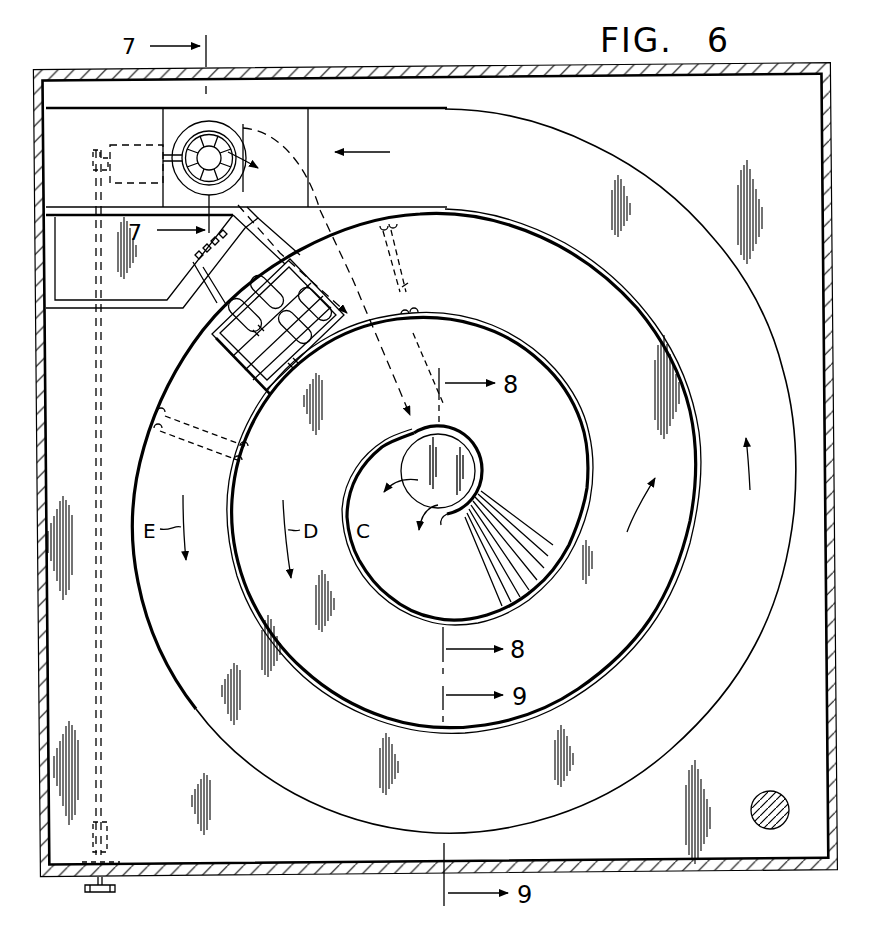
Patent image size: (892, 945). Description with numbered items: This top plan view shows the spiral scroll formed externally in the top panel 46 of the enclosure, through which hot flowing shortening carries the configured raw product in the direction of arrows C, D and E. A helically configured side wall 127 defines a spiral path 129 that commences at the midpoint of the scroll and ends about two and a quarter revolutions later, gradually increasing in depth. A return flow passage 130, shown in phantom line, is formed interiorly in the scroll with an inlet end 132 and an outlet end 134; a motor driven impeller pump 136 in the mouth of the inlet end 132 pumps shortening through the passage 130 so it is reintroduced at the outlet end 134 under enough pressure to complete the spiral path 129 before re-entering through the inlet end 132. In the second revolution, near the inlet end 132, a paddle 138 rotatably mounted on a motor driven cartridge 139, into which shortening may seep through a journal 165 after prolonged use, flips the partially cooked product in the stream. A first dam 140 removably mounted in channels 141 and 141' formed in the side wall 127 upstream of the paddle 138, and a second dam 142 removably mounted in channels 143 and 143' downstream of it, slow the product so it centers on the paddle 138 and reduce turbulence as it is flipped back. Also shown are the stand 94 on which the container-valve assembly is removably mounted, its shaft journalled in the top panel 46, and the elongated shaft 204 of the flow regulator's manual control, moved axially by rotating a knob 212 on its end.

The top panel 46 is at (762, 781).
The stand 94 is at (790, 808).
The helically configured side wall 127 is at (576, 409).
The spiral path 129 is at (552, 481).
The return flow passage 130 is at (351, 281).
The inlet end 132 is at (228, 132).
The outlet end 134 is at (468, 520).
The motor driven impeller pump 136 is at (185, 151).
The paddle 138 is at (262, 386).
The motor driven cartridge 139 is at (110, 145).
The first dam 140 is at (407, 288).
The channel 141 is at (405, 230).
The channel 141' is at (448, 345).
The second dam 142 is at (218, 453).
The channel 143 is at (266, 464).
The channel 143' is at (133, 431).
The journal 165 is at (207, 308).
The elongated shaft 204 is at (100, 762).
The knob 212 is at (113, 891).